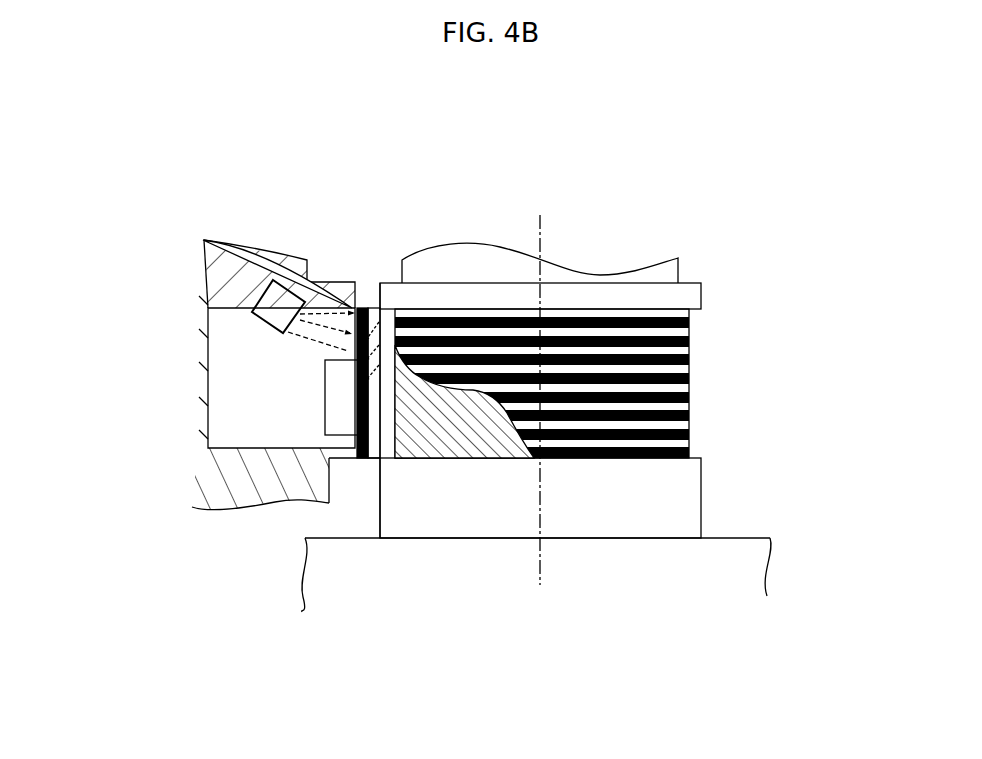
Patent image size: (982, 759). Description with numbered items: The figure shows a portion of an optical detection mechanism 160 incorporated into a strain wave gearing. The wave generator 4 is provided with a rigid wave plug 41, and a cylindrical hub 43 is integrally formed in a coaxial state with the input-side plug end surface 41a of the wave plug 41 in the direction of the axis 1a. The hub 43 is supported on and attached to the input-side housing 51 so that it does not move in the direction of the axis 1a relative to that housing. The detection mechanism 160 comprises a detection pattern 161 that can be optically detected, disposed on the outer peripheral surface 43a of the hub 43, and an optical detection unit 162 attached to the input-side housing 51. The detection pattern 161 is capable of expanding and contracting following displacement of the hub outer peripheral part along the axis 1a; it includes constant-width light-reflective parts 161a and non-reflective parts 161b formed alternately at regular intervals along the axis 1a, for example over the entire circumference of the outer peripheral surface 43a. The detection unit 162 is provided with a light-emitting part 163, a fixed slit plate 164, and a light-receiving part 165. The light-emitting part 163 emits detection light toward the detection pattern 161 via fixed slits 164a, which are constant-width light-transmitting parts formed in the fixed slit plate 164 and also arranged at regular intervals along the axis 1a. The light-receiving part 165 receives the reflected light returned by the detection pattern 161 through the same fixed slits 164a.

The axis 1a is at (549, 220).
The wave generator 4 is at (432, 584).
The wave plug 41 is at (296, 568).
The plug end surface 41a is at (727, 538).
The hub 43 is at (704, 265).
The outer peripheral surface 43a is at (690, 363).
The input-side housing 51 is at (198, 520).
The detection mechanism 160 is at (159, 256).
The detection pattern 161 is at (300, 172).
The light-reflective parts 161a is at (352, 308).
The non-reflective parts 161b is at (363, 310).
The optical detection unit 162 is at (108, 282).
The light-emitting part 163 is at (248, 329).
The fixed slit plate 164 is at (343, 338).
The fixed slits 164a is at (268, 258).
The light-receiving part 165 is at (319, 399).